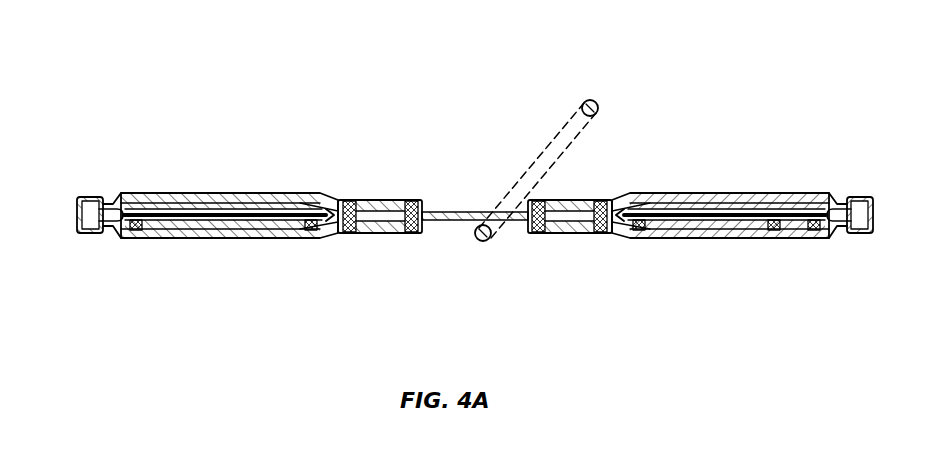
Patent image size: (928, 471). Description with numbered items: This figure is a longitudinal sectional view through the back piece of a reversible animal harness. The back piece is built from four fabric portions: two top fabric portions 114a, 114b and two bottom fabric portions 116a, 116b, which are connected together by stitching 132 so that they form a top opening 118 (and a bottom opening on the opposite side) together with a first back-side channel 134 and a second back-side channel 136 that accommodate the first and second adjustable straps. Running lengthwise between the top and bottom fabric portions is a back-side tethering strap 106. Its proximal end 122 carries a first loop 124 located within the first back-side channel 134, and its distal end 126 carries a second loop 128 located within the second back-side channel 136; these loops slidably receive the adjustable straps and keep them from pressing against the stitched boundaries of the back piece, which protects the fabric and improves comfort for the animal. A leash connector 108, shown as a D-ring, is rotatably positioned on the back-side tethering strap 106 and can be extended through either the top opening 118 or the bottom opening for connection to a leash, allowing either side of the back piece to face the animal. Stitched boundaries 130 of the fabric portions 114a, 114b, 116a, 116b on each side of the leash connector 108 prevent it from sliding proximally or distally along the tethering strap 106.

The back-side tethering strap 106 is at (465, 220).
The leash connector 108 is at (590, 100).
The top fabric portion 114a is at (235, 193).
The top fabric portion 114b is at (730, 193).
The bottom fabric portion 116a is at (215, 240).
The bottom fabric portion 116b is at (722, 240).
The top opening 118 is at (424, 201).
The proximal end 122 is at (121, 193).
The first loop 124 is at (170, 213).
The distal end 126 is at (829, 193).
The second loop 128 is at (795, 213).
The stitched boundaries 130 is at (410, 233).
The stitching 132 is at (135, 240).
The first back-side channel 134 is at (290, 213).
The second back-side channel 136 is at (680, 213).